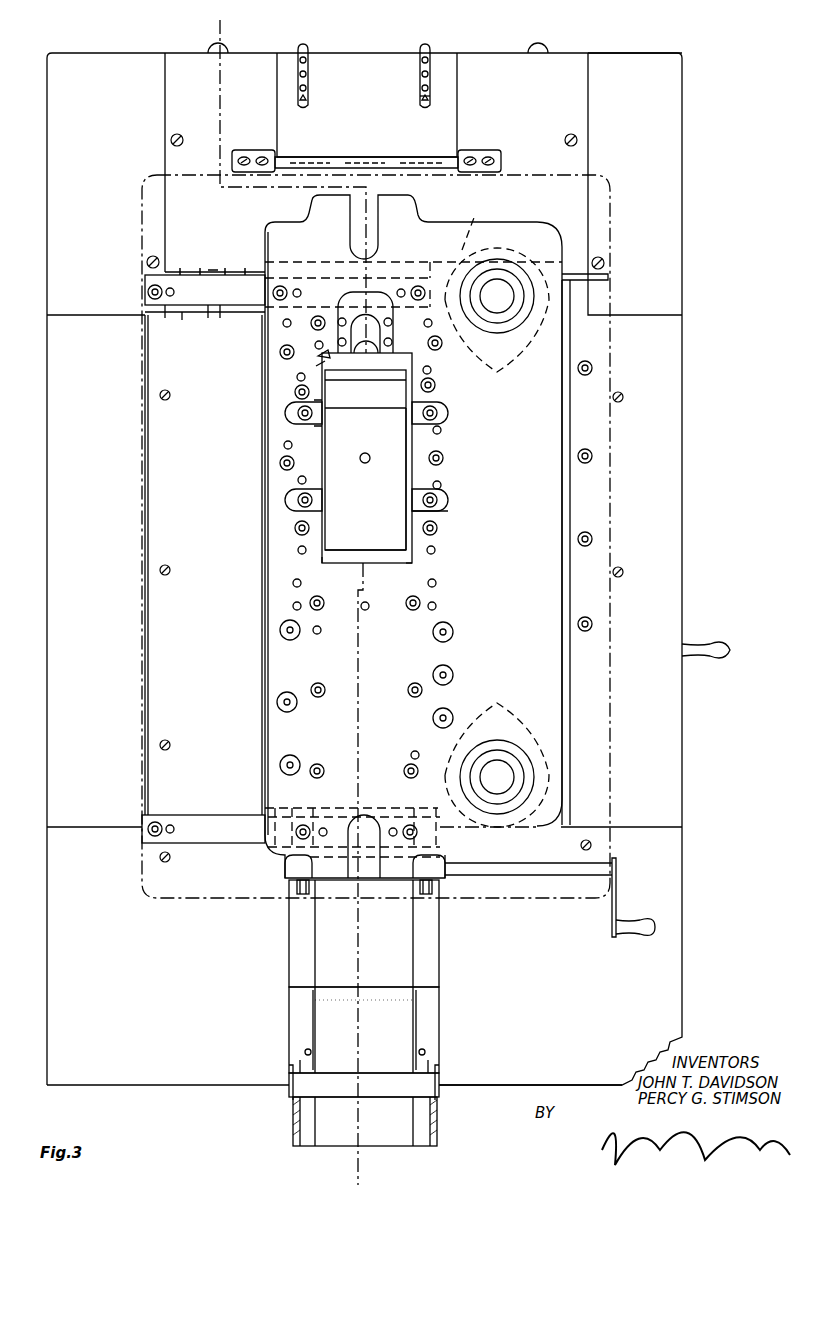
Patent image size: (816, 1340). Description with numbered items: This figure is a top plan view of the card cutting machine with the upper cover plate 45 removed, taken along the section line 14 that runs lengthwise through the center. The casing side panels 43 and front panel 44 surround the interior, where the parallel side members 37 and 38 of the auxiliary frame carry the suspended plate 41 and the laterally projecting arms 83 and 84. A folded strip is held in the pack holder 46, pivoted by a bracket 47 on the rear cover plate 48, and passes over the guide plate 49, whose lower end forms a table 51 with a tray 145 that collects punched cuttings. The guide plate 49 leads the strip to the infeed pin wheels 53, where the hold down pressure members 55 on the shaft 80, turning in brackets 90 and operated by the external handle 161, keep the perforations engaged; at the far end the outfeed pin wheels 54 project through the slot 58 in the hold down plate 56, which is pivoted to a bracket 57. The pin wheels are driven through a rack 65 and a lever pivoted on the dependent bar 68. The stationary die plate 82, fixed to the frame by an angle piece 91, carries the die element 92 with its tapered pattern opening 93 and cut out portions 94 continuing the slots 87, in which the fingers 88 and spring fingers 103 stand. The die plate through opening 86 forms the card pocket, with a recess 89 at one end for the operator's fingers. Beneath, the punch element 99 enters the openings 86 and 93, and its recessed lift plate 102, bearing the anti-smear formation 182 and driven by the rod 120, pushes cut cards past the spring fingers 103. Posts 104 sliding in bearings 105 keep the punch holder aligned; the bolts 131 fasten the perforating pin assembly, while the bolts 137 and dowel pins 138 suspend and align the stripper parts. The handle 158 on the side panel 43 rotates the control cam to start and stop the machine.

The section line 14- 14 is at (200, 27).
The side member 37 is at (598, 276).
The side member 38 is at (147, 312).
The plate 41 is at (265, 583).
The side panel 43 is at (47, 626).
The front panel 44 is at (565, 62).
The top lid or cover plate 45 is at (142, 572).
The pack holder 46 is at (428, 1150).
The bracket 47 is at (432, 1058).
The rear cover plate 48 is at (478, 1080).
The guide plate 49 is at (442, 970).
The table 51 is at (442, 1018).
The infeed pin wheels 53 is at (432, 887).
The outfeed pin wheels 54 is at (432, 88).
The hold down pressure member 55 is at (297, 885).
The hold down plate 56 is at (455, 106).
The bracket 57 is at (482, 150).
The slot 58 is at (420, 100).
The rack 65 is at (213, 272).
The dependent bar 68 is at (190, 318).
The shaft 80 is at (520, 870).
The die plate 82 is at (262, 610).
The arm 83 is at (208, 823).
The arm 84 is at (147, 282).
The through opening 86 is at (320, 560).
The slots 87 is at (440, 513).
The fingers 88 is at (440, 487).
The recess 89 is at (372, 342).
The brackets 90 is at (288, 864).
The angle piece 91 is at (566, 490).
The die element 92 is at (318, 356).
The opening 93 is at (316, 366).
The cut out portions 94 is at (437, 475).
The punch element 99 is at (412, 563).
The lift plate 102 is at (388, 542).
The spring fingers 103 is at (406, 500).
The posts 104 is at (497, 536).
The bearings 105 is at (508, 318).
The rod 120 is at (370, 458).
The bolts 131 is at (406, 603).
The bolts 137 is at (453, 628).
The dowel pins 138 is at (448, 670).
The tray 145 is at (372, 992).
The handle 158 is at (716, 660).
The handle 161 is at (640, 937).
The formation 182 is at (345, 398).